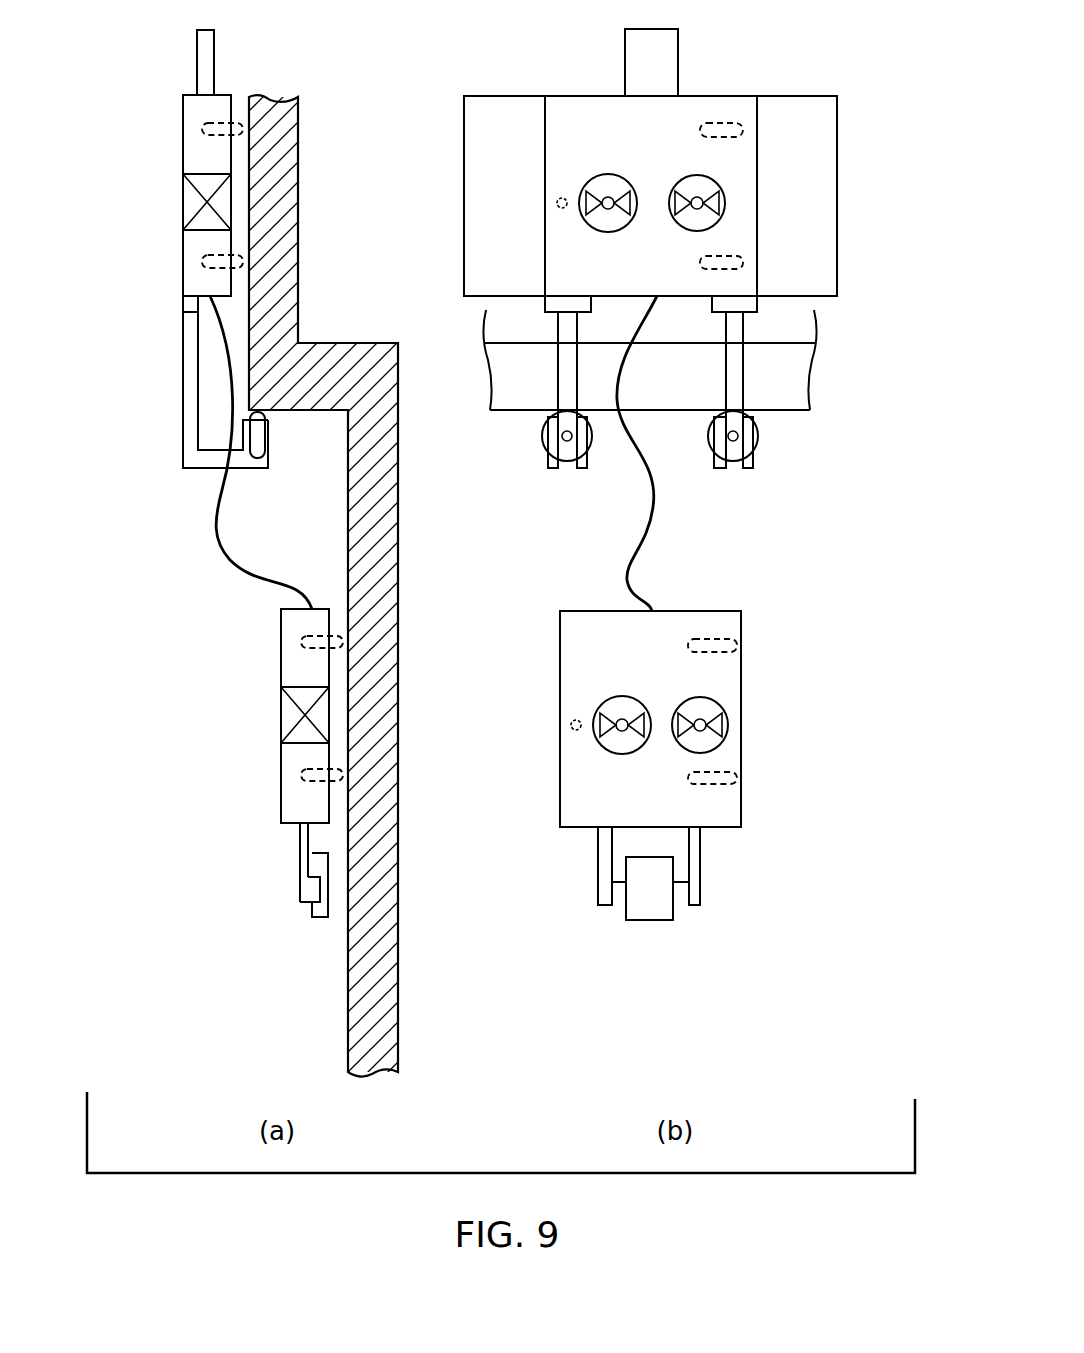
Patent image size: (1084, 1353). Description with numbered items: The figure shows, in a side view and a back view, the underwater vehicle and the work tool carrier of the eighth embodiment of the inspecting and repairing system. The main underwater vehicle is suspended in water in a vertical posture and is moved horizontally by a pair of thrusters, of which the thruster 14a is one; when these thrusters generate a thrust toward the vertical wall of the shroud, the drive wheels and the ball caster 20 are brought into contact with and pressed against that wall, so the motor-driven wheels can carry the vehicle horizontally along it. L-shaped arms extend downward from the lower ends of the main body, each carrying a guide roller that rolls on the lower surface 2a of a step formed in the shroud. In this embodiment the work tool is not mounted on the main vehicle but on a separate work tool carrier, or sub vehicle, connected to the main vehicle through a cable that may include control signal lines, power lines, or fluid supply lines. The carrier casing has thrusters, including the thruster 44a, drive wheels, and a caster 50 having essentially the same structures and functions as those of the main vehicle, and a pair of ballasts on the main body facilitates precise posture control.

The lower surface of step 2a is at (316, 398).
The thruster 14a is at (603, 183).
The ball caster 20 is at (555, 205).
The thruster 44a is at (620, 745).
The caster 50 is at (565, 722).